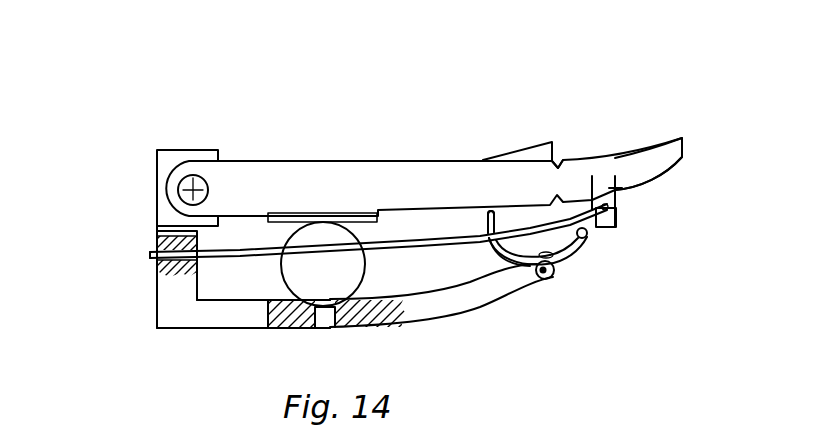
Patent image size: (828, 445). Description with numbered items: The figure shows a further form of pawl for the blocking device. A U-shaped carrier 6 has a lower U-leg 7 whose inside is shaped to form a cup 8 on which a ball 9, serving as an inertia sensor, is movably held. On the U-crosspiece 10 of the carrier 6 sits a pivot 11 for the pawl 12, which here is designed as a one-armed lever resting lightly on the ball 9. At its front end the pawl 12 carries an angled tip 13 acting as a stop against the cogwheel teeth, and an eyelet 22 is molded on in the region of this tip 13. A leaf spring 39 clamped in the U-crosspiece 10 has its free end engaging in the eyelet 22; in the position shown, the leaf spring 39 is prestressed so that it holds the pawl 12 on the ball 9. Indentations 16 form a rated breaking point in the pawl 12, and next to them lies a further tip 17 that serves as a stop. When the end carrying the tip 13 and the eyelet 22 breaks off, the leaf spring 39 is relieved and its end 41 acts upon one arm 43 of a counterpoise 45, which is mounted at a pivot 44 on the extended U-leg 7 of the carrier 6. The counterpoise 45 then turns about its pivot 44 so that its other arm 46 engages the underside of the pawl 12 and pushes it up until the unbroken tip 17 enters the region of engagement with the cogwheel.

The U-shaped carrier 6 is at (138, 219).
The lower U-leg 7 is at (177, 318).
The cup 8 is at (342, 323).
The ball 9 is at (305, 282).
The U-crosspiece 10 is at (168, 287).
The pivot 11 is at (203, 188).
The pawl 12 is at (363, 180).
The angled tip 13 is at (667, 150).
The indentations 16 is at (563, 152).
The further tip 17 is at (530, 147).
The eyelet 22 is at (622, 188).
The leaf spring 39 is at (243, 255).
The end of leaf spring 41 is at (620, 198).
The arm of counterpoise 43 is at (583, 240).
The pivot of counterpoise 44 is at (530, 270).
The counterpoise 45 is at (567, 290).
The other arm of counterpoise 46 is at (493, 240).